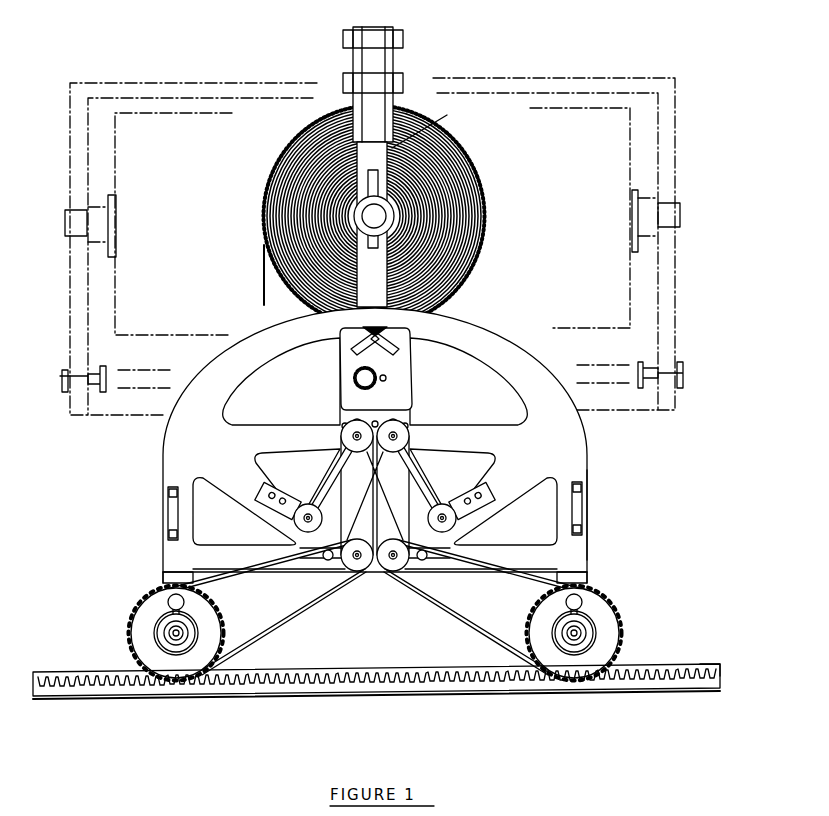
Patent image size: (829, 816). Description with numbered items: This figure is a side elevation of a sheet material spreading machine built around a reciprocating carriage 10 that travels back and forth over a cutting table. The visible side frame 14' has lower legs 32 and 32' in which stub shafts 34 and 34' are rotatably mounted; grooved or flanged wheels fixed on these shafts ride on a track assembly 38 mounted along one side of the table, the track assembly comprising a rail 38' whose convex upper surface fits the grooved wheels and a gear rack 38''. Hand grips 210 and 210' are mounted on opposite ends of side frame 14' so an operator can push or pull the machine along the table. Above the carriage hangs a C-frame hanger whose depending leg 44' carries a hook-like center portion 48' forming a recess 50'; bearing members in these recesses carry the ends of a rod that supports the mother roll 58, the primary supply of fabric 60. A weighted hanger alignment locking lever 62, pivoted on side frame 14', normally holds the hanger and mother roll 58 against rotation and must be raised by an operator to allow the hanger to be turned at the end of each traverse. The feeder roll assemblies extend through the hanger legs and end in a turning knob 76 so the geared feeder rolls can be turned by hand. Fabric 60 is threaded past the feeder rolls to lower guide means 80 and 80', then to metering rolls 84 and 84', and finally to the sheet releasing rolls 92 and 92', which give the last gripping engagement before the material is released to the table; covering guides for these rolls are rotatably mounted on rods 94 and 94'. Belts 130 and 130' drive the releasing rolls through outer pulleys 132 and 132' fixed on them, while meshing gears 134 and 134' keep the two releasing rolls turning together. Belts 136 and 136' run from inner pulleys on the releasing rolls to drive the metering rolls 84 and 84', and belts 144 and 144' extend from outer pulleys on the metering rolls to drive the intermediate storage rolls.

The reciprocating carriage 10 is at (158, 461).
The side frame 14' is at (602, 503).
The leg 32 is at (159, 575).
The leg 32' is at (596, 572).
The stub shaft 34 is at (158, 633).
The stub shaft 34' is at (591, 633).
The track assembly 38 is at (373, 703).
The rail 38' is at (726, 660).
The gear rack 38'' is at (394, 692).
The depending member or leg 44' is at (394, 368).
The hook-like center portion 48' is at (304, 216).
The recess 50' is at (433, 216).
The mother roll 58 is at (464, 158).
The fabric 60 is at (263, 287).
The hanger alignment locking lever 62 is at (430, 127).
The turning knob 76 is at (355, 378).
The lower guide means 80 is at (337, 417).
The lower guide means 80' is at (405, 417).
The metering roll 84 is at (336, 436).
The metering roll 84' is at (414, 436).
The sheet releasing roll 92 is at (362, 570).
The sheet releasing roll 92' is at (387, 580).
The rod 94 is at (297, 572).
The rod 94' is at (451, 572).
The belt 130 is at (266, 608).
The belt 130' is at (485, 608).
The outer pulley 132 is at (277, 592).
The outer pulley 132' is at (475, 592).
The gear 134 is at (318, 571).
The gear 134' is at (434, 571).
The belt 136 is at (372, 495).
The belt 136' is at (380, 495).
The belt 144 is at (307, 483).
The belt 144' is at (442, 483).
The hand grip 210 is at (148, 513).
The hand grip 210' is at (606, 508).